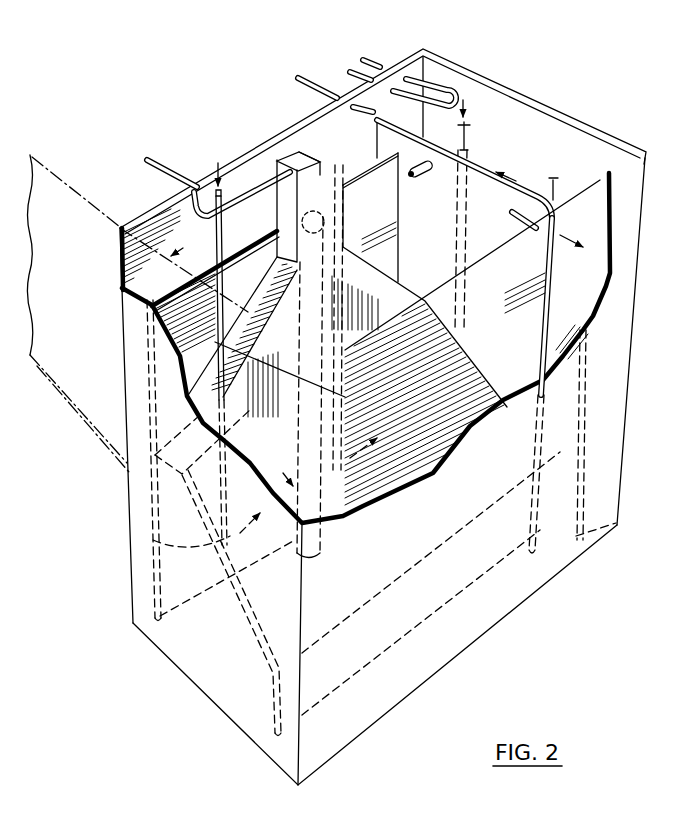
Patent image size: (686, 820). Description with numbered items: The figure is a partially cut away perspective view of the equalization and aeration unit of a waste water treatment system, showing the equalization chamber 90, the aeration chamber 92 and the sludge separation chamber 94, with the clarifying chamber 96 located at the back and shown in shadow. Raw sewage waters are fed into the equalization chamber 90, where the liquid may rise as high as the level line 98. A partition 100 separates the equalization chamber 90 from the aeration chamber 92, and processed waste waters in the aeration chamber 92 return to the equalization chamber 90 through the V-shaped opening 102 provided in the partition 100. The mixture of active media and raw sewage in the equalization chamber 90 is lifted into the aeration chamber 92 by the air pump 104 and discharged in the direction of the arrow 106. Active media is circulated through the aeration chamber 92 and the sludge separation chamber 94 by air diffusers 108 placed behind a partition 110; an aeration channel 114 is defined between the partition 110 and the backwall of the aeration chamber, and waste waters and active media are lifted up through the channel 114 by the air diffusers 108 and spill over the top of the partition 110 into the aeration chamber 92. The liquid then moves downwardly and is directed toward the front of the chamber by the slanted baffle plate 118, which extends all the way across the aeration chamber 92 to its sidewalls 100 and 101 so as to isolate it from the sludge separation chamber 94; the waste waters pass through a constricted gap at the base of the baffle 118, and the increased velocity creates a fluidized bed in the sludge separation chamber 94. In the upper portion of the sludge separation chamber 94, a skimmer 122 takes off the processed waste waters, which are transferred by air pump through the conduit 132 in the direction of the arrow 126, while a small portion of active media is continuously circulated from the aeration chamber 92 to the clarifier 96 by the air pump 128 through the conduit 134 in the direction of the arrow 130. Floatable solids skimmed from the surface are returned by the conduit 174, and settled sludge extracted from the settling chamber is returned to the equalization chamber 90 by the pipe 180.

The equalization chamber 90 is at (542, 118).
The aeration chamber 92 is at (456, 375).
The sludge separation chamber 94 is at (226, 655).
The clarifying chamber 96 is at (114, 406).
The level line 98 is at (578, 247).
The partition 100 is at (478, 192).
The sidewall 101 is at (258, 468).
The V-shaped opening 102 is at (536, 230).
The air pump 104 is at (470, 140).
The arrow 106 is at (421, 173).
The air diffusers 108 is at (153, 540).
The partition 110 is at (157, 586).
The aeration channel 114 is at (163, 288).
The slanted baffle plate 118 is at (252, 630).
The skimmer 122 is at (328, 219).
The arrow 126 is at (146, 158).
The air pump 128 is at (556, 205).
The arrow 130 is at (296, 76).
The conduit 132 is at (169, 163).
The conduit 134 is at (306, 77).
The conduit 174 is at (455, 98).
The pipe 180 is at (428, 84).